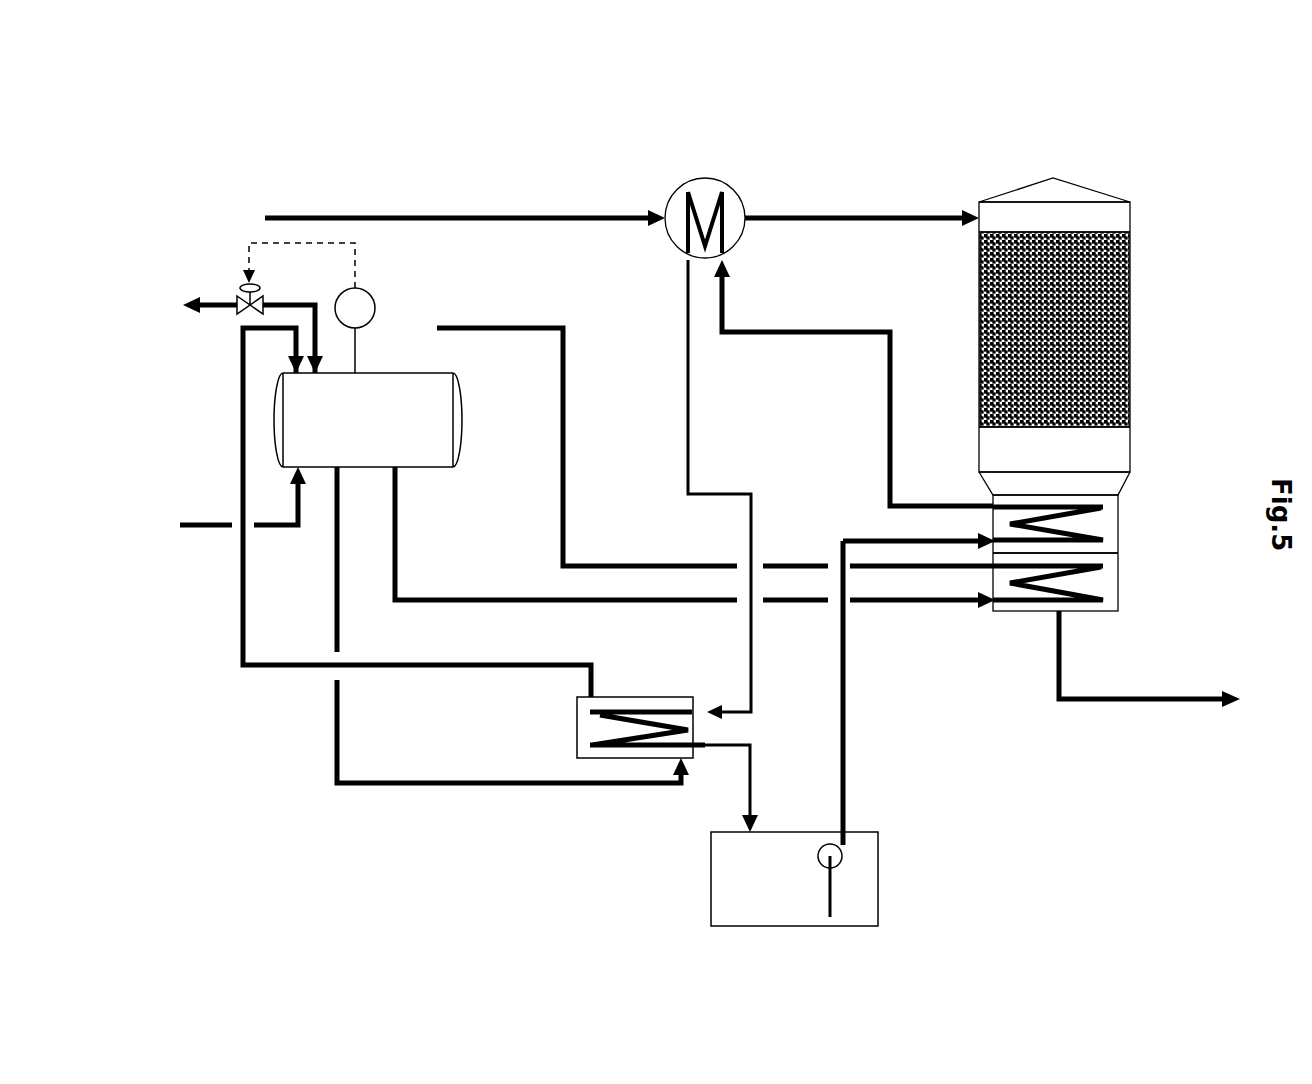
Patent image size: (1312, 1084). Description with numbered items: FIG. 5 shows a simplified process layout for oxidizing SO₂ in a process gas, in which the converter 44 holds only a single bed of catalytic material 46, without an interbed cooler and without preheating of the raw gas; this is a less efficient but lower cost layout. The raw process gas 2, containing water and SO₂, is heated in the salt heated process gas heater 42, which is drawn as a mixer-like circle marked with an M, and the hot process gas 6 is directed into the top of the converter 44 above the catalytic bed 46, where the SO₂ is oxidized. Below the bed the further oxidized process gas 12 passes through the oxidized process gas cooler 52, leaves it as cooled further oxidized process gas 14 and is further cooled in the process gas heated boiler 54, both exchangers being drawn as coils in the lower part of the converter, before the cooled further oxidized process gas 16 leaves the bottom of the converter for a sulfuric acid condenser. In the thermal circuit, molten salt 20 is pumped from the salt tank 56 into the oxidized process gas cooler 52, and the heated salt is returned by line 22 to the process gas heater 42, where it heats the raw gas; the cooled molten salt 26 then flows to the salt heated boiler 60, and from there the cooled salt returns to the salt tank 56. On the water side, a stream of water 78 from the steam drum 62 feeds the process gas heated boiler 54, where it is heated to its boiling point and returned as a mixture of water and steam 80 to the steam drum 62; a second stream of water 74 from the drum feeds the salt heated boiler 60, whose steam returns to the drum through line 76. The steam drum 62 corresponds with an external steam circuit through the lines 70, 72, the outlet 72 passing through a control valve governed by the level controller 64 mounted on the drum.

The raw process gas 2 is at (362, 216).
The hot process gas 6 is at (830, 216).
The further oxidized process gas 12 is at (1062, 489).
The cooled further oxidized process gas 14 is at (1062, 564).
The cooled further oxidized process gas 16 is at (1167, 699).
The molten salt 20 is at (850, 541).
The heated fluid return line 22 is at (889, 475).
The cooled molten salt 26 is at (686, 475).
The process gas heater 42 is at (711, 181).
The converter 44 is at (1028, 195).
The catalytic bed 46 is at (1131, 266).
The oxidized process gas cooler 52 is at (1098, 518).
The process gas heated boiler 54 is at (1098, 592).
The salt tank 56 is at (823, 832).
The salt heated boiler 60 is at (658, 697).
The steam drum 62 is at (375, 467).
The level controller 64 is at (343, 292).
The external steam circuit 70 is at (208, 525).
The external steam circuit 72 is at (205, 305).
The stream of water 74 is at (495, 783).
The return line to separator 76 is at (447, 665).
The stream of water 78 is at (512, 600).
The mixture of water and steam 80 is at (652, 566).